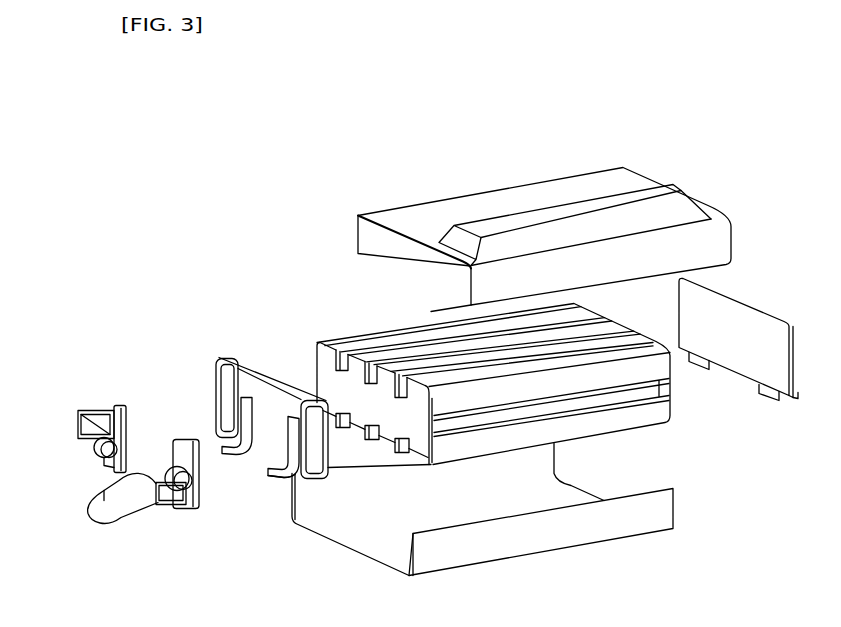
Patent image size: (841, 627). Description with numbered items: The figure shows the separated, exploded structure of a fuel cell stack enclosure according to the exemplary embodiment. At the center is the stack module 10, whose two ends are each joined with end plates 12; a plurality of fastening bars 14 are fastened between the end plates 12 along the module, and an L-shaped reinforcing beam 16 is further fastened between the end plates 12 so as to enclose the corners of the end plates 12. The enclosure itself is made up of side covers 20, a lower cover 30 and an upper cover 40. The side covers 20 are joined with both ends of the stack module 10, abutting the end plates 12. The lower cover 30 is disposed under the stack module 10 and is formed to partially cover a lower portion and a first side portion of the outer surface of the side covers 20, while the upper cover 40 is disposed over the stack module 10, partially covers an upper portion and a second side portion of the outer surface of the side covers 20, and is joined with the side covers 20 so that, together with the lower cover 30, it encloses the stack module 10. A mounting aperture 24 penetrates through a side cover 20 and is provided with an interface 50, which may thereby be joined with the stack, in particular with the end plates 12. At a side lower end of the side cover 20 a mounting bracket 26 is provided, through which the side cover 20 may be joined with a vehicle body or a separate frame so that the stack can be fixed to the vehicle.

The stack module 10 is at (502, 366).
The end plate 12 is at (325, 373).
The fastening bar 14 is at (452, 358).
The reinforcing beam 16 is at (670, 373).
The side cover 20 is at (748, 313).
The mounting aperture 24 is at (228, 390).
The mounting bracket 26 is at (293, 477).
The lower cover 30 is at (360, 545).
The upper cover 40 is at (657, 197).
The interface 50 is at (98, 395).